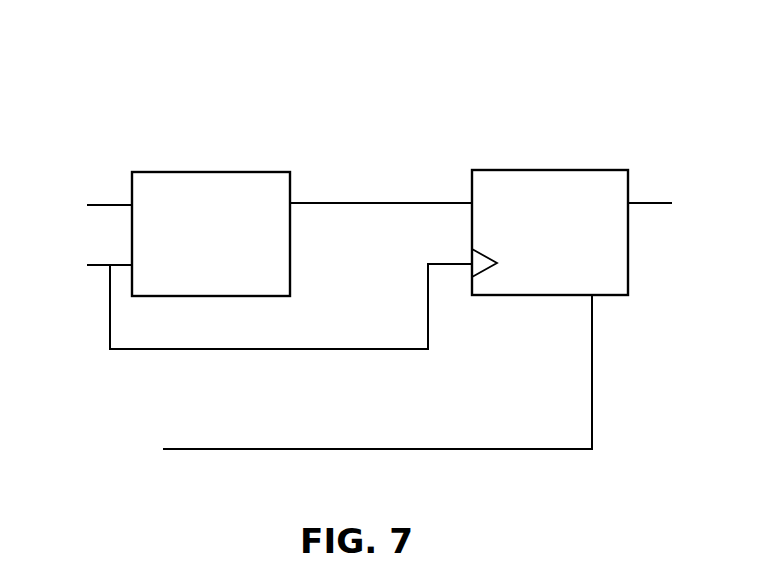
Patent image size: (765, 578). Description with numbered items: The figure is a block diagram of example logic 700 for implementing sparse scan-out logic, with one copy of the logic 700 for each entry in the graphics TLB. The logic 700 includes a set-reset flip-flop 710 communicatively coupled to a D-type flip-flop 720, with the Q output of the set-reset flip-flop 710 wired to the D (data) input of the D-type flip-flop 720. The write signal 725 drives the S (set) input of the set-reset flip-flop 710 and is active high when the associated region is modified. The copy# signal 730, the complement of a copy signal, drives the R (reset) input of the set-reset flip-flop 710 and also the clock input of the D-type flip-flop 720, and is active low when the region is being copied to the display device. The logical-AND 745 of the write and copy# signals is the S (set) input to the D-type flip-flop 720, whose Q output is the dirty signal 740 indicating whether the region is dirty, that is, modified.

The logic 700 is at (548, 86).
The set-reset flip-flop 710 is at (212, 172).
The D-type flip-flop 720 is at (550, 170).
The write 725 is at (55, 186).
The copy# 730 is at (40, 287).
The dirty 740 is at (703, 182).
The logical-AND of the write and copy# signals 745 is at (58, 433).